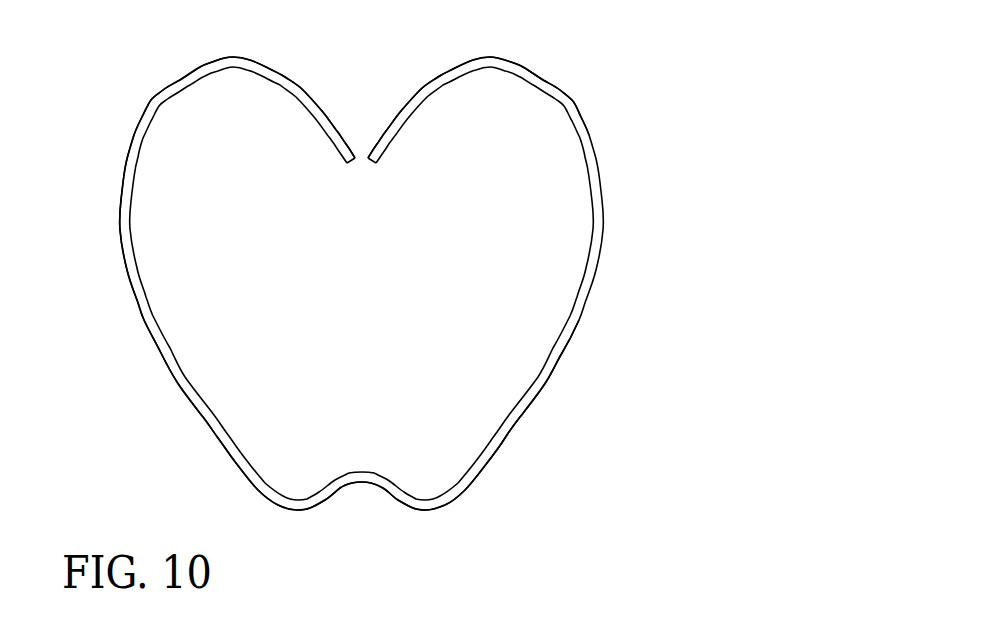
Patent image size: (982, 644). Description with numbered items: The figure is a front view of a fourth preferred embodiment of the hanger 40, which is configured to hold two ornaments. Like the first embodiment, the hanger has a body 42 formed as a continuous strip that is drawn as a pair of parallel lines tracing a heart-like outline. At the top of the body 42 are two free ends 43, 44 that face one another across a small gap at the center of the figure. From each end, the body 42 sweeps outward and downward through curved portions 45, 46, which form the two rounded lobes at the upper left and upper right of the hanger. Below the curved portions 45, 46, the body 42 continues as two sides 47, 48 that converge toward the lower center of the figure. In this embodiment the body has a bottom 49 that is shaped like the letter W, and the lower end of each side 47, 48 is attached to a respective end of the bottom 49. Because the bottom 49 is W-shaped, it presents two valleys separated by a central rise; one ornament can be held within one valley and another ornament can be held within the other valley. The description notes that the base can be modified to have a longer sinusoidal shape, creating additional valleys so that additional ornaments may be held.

The hanger 40 is at (136, 92).
The body 42 is at (111, 248).
The end 43 is at (340, 150).
The end 44 is at (383, 150).
The curved portion 45 is at (296, 84).
The curved portion 46 is at (566, 96).
The side 47 is at (175, 381).
The side 48 is at (547, 382).
The bottom 49 is at (413, 509).